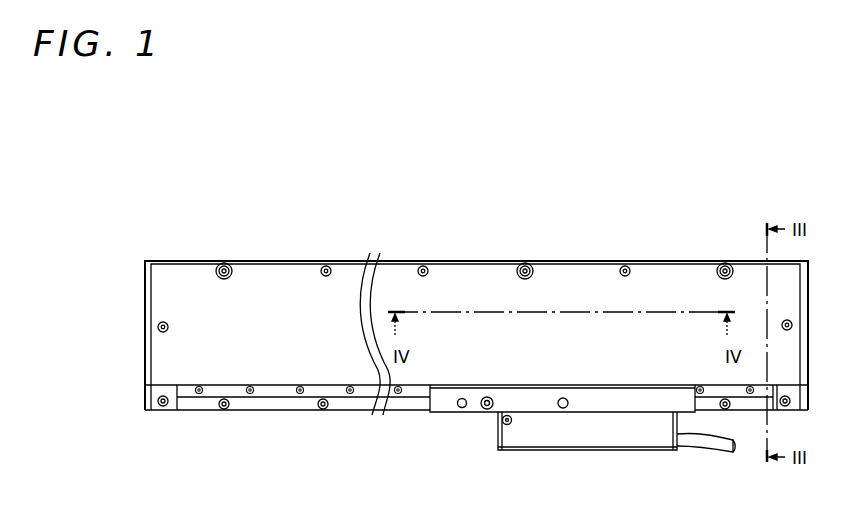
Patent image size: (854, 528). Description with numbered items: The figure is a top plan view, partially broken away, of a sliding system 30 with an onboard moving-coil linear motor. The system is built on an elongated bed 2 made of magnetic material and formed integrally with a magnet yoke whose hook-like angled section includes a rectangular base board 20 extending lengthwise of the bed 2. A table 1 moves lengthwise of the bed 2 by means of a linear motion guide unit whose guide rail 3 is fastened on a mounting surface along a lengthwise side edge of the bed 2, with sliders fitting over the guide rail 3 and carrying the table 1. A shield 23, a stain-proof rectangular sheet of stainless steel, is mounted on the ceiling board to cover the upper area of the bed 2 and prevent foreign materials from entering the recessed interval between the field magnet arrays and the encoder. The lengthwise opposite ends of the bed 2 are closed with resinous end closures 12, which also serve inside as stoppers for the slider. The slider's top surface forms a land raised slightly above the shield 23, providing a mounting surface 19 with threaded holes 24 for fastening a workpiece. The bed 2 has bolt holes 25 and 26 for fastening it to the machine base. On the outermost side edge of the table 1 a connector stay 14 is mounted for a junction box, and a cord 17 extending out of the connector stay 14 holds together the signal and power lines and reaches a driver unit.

The table 1 is at (443, 405).
The bed 2 is at (352, 408).
The guide rail 3 is at (273, 392).
The end closure 12 is at (148, 298).
The connector stay 14 is at (618, 442).
The cord 17 is at (710, 447).
The mounting surface 19 is at (588, 403).
The base board 20 is at (707, 403).
The shield 23 is at (218, 367).
The threaded holes 24 is at (462, 408).
The bolt holes 25 is at (227, 265).
The bolt holes 26 is at (323, 409).
The sliding system 30 is at (666, 260).